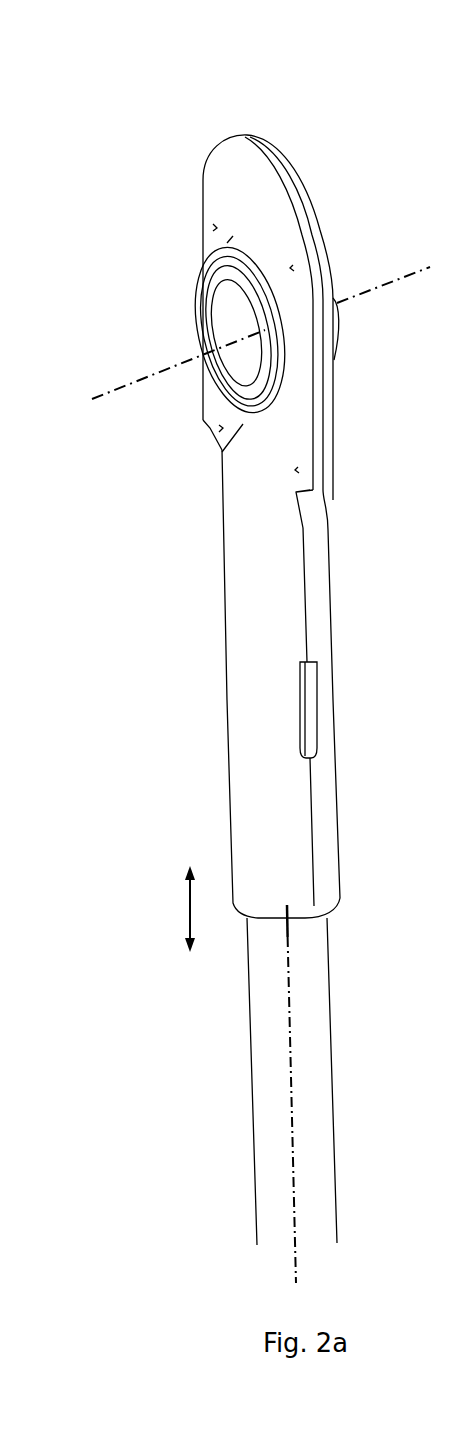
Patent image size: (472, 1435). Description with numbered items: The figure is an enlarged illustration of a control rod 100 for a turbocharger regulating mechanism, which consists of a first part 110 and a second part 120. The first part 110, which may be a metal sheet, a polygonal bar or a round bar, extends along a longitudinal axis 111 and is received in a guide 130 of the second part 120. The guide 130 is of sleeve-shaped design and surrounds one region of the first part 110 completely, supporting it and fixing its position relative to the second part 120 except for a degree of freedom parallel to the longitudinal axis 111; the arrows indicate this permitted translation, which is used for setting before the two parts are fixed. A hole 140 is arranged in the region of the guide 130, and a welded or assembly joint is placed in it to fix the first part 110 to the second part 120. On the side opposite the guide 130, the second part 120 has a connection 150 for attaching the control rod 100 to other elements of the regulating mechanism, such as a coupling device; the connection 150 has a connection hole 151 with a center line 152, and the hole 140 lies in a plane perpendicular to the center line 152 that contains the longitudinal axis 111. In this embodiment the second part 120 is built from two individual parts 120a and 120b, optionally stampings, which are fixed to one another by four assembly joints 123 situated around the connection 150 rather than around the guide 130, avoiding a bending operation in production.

The control rod 100 is at (140, 90).
The first part 110 is at (323, 1053).
The longitudinal axis 111 is at (295, 1272).
The second part 120 is at (188, 560).
The first individual part 120a is at (243, 836).
The second individual part 120b is at (328, 824).
The assembly joints 123 is at (215, 227).
The guide 130 is at (332, 650).
The hole 140 is at (307, 715).
The connection 150 is at (225, 192).
The connection hole 151 is at (233, 313).
The center line 152 is at (127, 384).